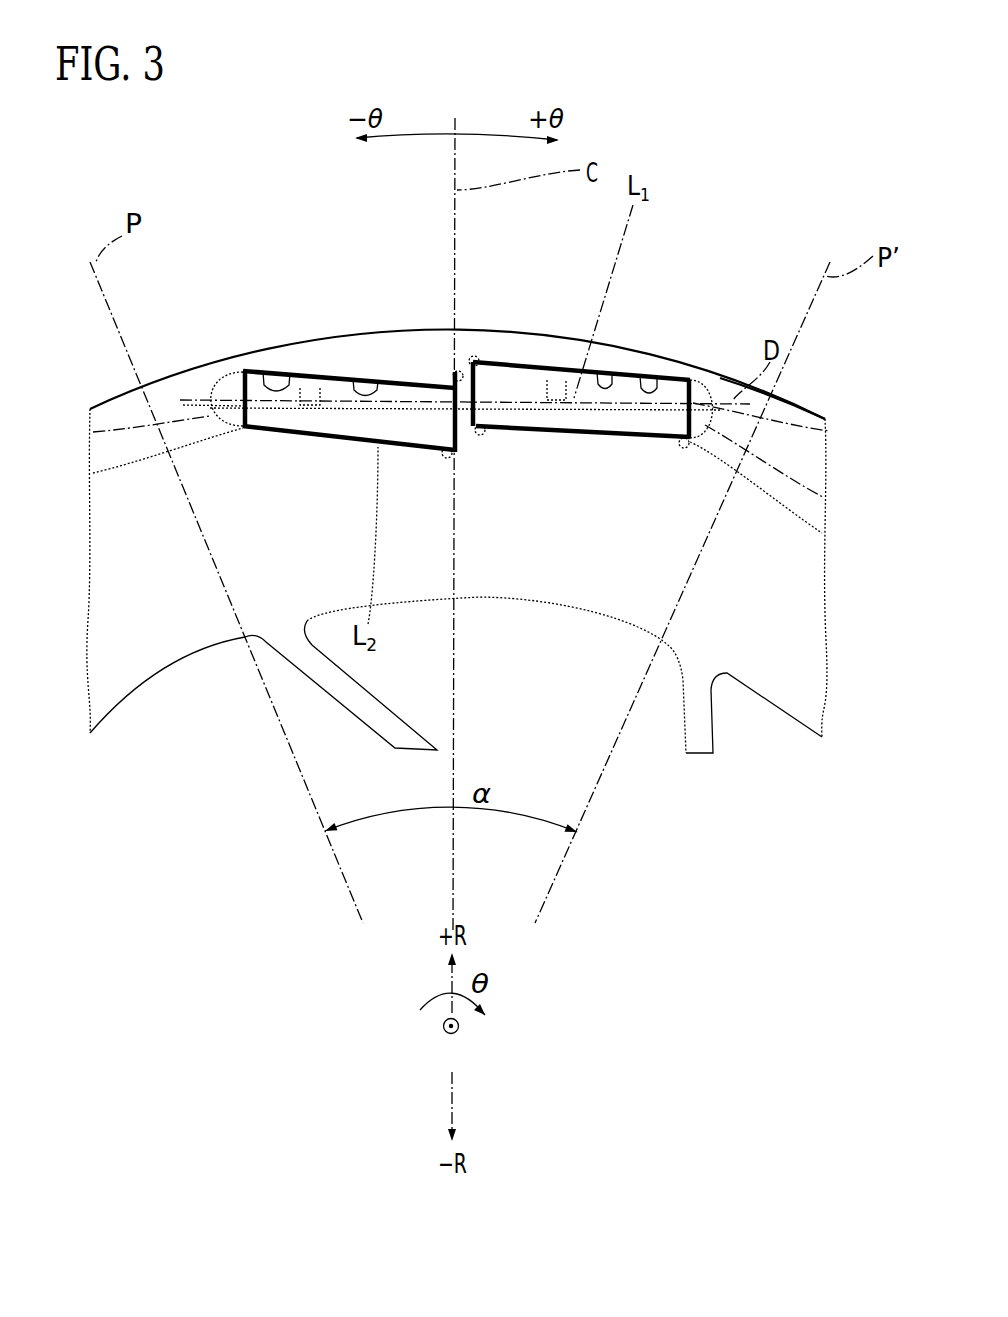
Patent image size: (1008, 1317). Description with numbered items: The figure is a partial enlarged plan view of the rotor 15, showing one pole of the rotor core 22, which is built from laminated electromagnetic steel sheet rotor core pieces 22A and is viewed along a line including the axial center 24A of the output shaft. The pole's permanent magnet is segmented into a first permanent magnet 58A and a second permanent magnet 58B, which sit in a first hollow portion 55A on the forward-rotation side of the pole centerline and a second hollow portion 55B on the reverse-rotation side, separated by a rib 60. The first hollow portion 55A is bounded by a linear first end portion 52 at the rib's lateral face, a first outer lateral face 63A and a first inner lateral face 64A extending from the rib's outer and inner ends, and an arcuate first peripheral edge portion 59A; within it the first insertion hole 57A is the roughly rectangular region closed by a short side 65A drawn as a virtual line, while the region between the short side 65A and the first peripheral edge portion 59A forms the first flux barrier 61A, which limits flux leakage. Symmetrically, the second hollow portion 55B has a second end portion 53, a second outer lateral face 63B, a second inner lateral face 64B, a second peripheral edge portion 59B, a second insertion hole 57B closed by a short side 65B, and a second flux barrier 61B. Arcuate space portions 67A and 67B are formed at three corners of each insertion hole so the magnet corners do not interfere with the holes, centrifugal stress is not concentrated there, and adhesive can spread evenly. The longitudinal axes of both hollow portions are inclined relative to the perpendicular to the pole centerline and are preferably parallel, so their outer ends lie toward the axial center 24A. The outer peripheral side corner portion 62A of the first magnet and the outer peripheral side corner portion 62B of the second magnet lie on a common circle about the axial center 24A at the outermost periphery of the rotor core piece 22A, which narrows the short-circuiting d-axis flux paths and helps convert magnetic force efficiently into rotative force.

The rotor 15 is at (838, 414).
The rotor core 22 is at (797, 580).
The rotor core piece 22A is at (780, 420).
The axial center 24A is at (452, 1044).
The first end portion 52 is at (497, 360).
The second end portion 53 is at (432, 378).
The first hollow portion 55A is at (634, 356).
The second hollow portion 55B is at (297, 358).
The first insertion hole 57A is at (648, 378).
The second insertion hole 57B is at (262, 370).
The first permanent magnet 58A is at (556, 380).
The second permanent magnet 58B is at (306, 392).
The first peripheral edge portion 59A is at (735, 392).
The second peripheral edge portion 59B is at (232, 365).
The rib 60 is at (487, 365).
The first flux barrier 61A is at (830, 431).
The second flux barrier 61B is at (183, 405).
The outer peripheral side corner portion 62A is at (693, 380).
The outer peripheral side corner portion 62B is at (244, 372).
The first outer lateral face 63A is at (605, 376).
The second outer lateral face 63B is at (366, 385).
The first inner lateral face 64A is at (574, 428).
The second inner lateral face 64B is at (337, 432).
The short side 65A is at (823, 497).
The short side 65B is at (93, 432).
The space portions 67A is at (822, 533).
The space portions 67B is at (93, 473).